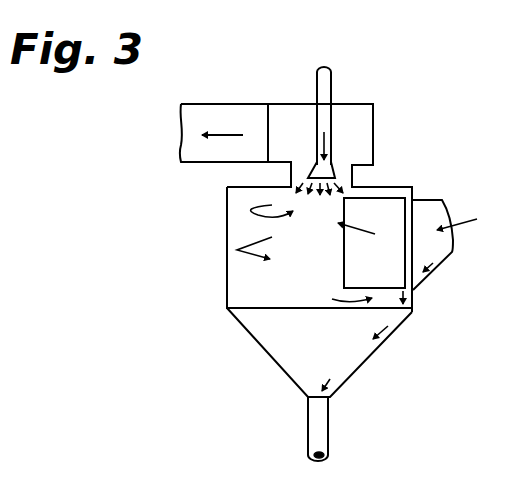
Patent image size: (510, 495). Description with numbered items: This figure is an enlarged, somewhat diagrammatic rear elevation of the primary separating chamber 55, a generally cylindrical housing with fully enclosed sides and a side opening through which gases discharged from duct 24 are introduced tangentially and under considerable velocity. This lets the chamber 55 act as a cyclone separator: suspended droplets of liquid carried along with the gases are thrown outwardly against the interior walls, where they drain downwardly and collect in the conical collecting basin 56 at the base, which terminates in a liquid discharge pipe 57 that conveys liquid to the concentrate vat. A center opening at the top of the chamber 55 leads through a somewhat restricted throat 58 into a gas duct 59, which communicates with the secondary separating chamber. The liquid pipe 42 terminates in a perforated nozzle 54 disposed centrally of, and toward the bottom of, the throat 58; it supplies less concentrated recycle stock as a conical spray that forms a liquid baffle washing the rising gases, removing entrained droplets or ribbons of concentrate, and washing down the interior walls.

The duct 24 is at (431, 212).
The liquid pipe 42 is at (325, 85).
The nozzle 54 is at (312, 174).
The primary separating chamber 55 is at (240, 286).
The conical collecting basin 56 is at (277, 347).
The liquid discharge pipe 57 is at (317, 428).
The restricted throat 58 is at (348, 178).
The gas duct 59 is at (248, 120).